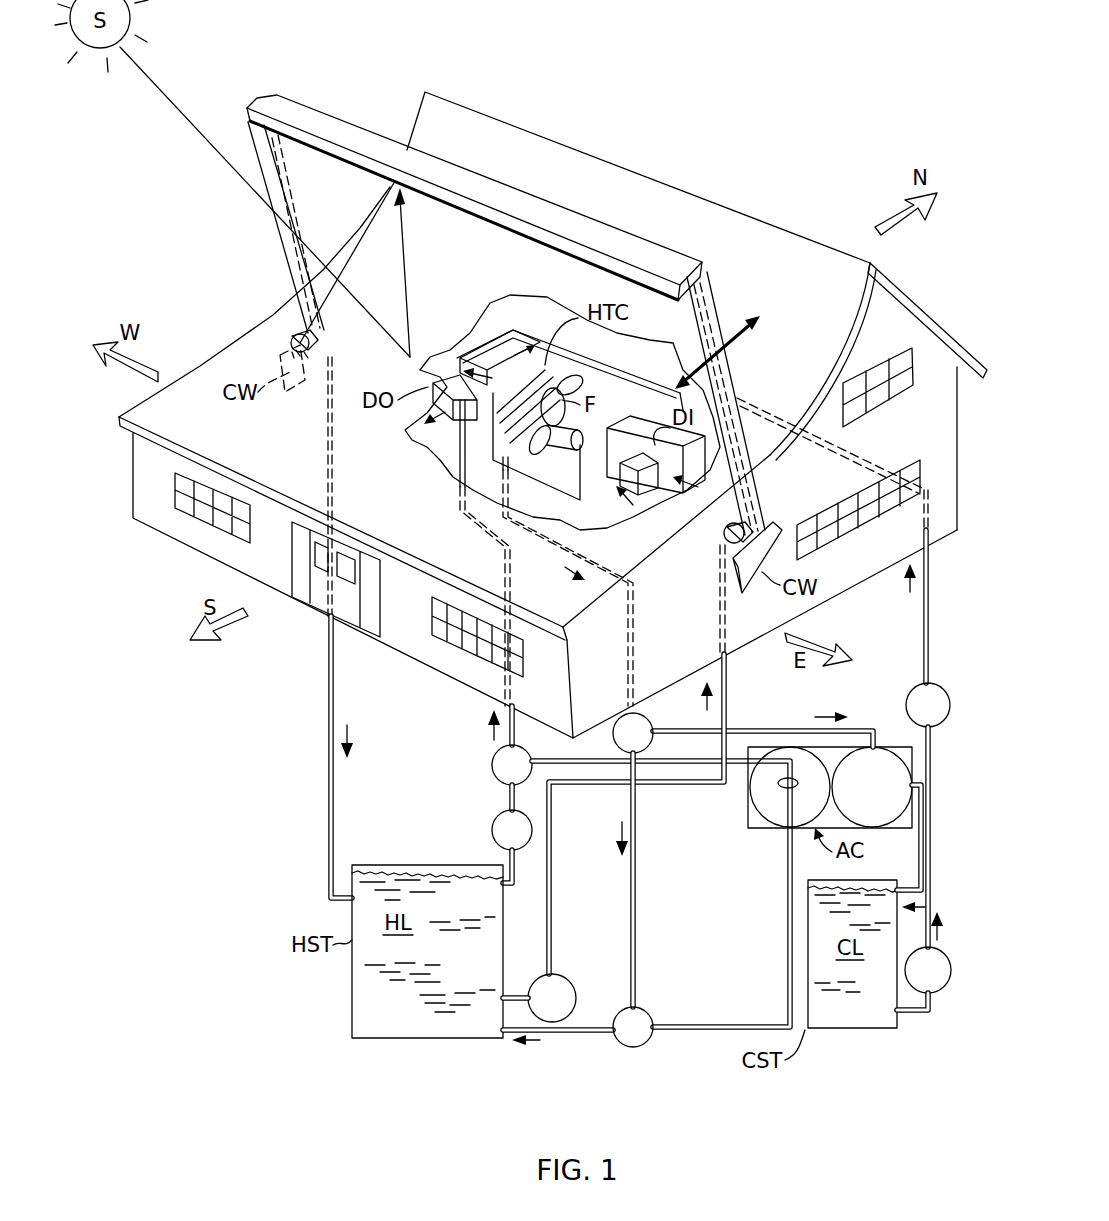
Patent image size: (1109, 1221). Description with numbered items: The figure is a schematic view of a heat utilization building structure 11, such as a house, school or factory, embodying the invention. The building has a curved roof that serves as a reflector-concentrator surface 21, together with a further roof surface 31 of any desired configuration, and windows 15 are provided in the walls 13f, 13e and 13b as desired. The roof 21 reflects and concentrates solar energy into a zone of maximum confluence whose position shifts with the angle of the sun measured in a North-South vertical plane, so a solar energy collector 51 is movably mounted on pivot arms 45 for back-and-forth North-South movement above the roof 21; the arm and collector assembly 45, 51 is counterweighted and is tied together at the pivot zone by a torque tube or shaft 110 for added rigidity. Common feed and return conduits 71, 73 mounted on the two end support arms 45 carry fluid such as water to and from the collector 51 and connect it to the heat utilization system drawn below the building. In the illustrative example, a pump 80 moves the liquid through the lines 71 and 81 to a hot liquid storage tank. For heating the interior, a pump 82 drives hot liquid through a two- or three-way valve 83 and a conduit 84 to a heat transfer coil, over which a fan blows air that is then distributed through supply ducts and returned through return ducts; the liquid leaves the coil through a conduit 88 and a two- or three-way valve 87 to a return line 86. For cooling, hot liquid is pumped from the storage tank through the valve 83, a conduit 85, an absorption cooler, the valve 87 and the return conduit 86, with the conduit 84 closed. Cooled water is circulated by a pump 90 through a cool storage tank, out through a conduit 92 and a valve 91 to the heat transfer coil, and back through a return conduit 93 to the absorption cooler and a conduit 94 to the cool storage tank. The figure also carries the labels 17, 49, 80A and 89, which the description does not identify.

The heat utilization building structure 11 is at (730, 182).
The wall 13b is at (957, 458).
The wall 13e is at (957, 400).
The wall 13f is at (157, 510).
The windows 15 is at (200, 525).
The door 17 is at (350, 625).
The curved roof/reflector-concentrator surface 21 is at (197, 422).
The further roof surface 31 is at (905, 312).
The pivot arms 45 is at (280, 182).
The fluid conduits 49 is at (292, 338).
The solar energy collector 51 is at (462, 168).
The feed conduit 71 is at (733, 392).
The return conduit 73 is at (290, 222).
The pump 80 is at (732, 712).
The pump 80A is at (570, 978).
The line 81 is at (332, 772).
The pump 82 is at (492, 830).
The two- or three-way valve 83 is at (492, 785).
The conduit 84 is at (492, 762).
The conduit 85 is at (665, 783).
The return line 86 is at (593, 1024).
The two- or three-way valve 87 is at (652, 1010).
The conduit 88 is at (640, 875).
The conduit 89 is at (588, 562).
The pump 90 is at (951, 978).
The valve 91 is at (945, 700).
The conduit 92 is at (930, 600).
The return conduit 93 is at (772, 731).
The conduit 94 is at (924, 870).
The torque tube or shaft 110 is at (322, 345).